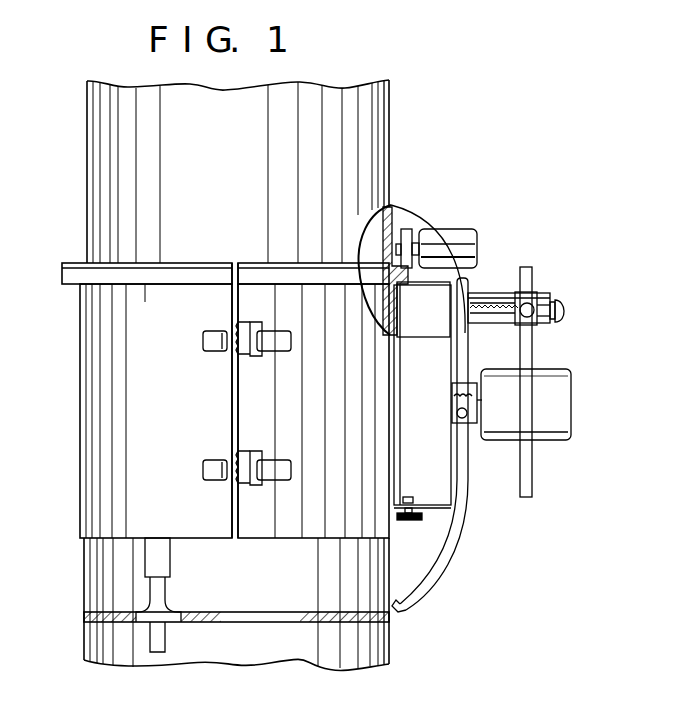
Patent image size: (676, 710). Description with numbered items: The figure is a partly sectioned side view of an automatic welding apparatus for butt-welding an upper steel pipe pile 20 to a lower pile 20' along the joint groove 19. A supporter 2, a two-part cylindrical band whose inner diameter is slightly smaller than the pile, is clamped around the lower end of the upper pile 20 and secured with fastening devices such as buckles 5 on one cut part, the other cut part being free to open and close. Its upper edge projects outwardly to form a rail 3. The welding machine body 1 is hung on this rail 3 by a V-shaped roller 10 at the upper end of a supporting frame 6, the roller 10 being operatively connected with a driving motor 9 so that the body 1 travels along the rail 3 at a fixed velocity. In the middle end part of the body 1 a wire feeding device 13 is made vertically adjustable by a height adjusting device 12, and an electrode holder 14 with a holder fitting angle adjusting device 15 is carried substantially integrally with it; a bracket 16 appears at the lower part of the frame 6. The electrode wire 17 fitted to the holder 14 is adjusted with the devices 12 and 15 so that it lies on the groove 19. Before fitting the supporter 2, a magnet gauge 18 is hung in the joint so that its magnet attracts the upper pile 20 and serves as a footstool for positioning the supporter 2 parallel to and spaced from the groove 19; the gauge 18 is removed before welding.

The welding machine body 1 is at (520, 238).
The supporter 2 is at (96, 381).
The rail 3 is at (409, 286).
The buckles 5 is at (280, 346).
The supporting frame 6 is at (412, 376).
The driving motor 9 is at (466, 230).
The V-shaped roller 10 is at (406, 230).
The height adjusting device 12 is at (530, 304).
The wire feeding device 13 is at (549, 380).
The electrode holder 14 is at (462, 520).
The holder fitting angle adjusting device 15 is at (464, 420).
The bracket 16 is at (418, 520).
The electrode wire 17 is at (440, 226).
The magnet gauge 18 is at (170, 570).
The groove 19 is at (386, 612).
The steel pipe pile 20 is at (263, 171).
The lower pile 20' is at (265, 604).